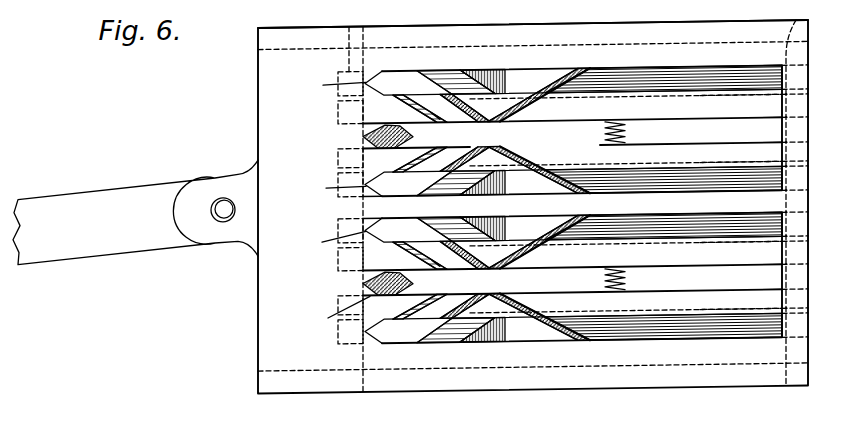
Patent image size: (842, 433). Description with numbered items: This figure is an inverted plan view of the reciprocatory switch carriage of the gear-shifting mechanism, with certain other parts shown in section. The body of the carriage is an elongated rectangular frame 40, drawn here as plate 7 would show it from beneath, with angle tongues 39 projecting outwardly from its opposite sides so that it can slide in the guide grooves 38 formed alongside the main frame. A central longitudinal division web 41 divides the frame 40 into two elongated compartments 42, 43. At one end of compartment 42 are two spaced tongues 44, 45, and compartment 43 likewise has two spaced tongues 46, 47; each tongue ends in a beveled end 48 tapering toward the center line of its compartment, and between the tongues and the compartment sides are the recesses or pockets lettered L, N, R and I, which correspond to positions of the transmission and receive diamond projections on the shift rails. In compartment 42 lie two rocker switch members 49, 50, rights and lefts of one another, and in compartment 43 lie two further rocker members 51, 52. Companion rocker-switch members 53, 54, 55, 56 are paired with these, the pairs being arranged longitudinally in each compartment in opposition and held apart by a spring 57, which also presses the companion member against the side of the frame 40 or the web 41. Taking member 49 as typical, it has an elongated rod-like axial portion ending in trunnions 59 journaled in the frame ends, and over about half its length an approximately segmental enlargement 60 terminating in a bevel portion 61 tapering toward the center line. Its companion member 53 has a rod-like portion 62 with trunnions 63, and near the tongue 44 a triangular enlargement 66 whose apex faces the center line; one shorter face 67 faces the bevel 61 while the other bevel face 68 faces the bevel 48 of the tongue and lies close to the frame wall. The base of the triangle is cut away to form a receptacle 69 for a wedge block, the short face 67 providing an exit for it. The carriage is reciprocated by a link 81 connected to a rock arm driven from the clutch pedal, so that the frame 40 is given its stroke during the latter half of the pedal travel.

The plate 7 is at (533, 14).
The guide groove 38 is at (458, 91).
The angle tongue 39 is at (615, 33).
The frame 40 is at (533, 185).
The longitudinal division web 41 is at (523, 225).
The compartment 42 is at (572, 279).
The compartment 43 is at (572, 132).
The tongue 44 is at (419, 306).
The tongue 45 is at (416, 255).
The tongue 46 is at (417, 108).
The tongue 47 is at (418, 159).
The beveled end 48 is at (432, 112).
The rocker switch member 49 is at (741, 301).
The rocker switch member 50 is at (741, 249).
The rocker member 51 is at (741, 155).
The rocker member 52 is at (741, 104).
The rocker-switch member 53 is at (363, 133).
The rocker-switch member 54 is at (535, 258).
The rocker-switch member 55 is at (435, 157).
The rocker-switch member 56 is at (626, 203).
The spring 57 is at (627, 131).
The trunnion 59 is at (330, 298).
The segmental enlargement 60 is at (617, 91).
The bevel portion 61 is at (552, 100).
The rod-like portion 62 is at (420, 403).
The trunnion 63 is at (349, 24).
The triangular enlargement 66 is at (493, 89).
The face 67 is at (522, 108).
The bevel face 68 is at (478, 114).
The receptacle 69 is at (499, 205).
The link 81 is at (135, 212).
The recess R is at (336, 86).
The recess L is at (338, 189).
The recess I is at (338, 240).
The recess N is at (341, 311).